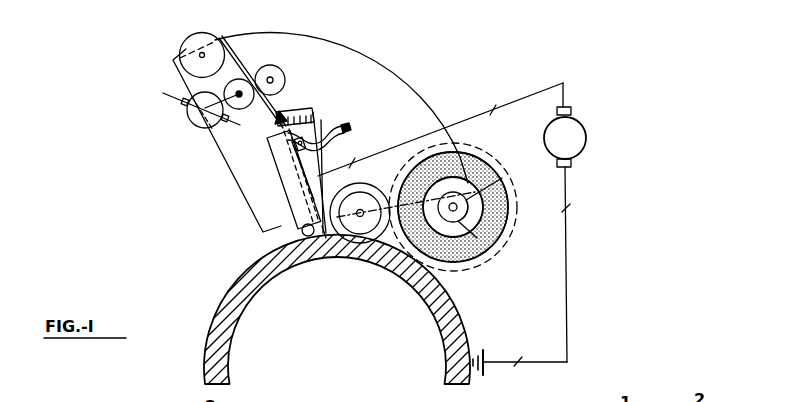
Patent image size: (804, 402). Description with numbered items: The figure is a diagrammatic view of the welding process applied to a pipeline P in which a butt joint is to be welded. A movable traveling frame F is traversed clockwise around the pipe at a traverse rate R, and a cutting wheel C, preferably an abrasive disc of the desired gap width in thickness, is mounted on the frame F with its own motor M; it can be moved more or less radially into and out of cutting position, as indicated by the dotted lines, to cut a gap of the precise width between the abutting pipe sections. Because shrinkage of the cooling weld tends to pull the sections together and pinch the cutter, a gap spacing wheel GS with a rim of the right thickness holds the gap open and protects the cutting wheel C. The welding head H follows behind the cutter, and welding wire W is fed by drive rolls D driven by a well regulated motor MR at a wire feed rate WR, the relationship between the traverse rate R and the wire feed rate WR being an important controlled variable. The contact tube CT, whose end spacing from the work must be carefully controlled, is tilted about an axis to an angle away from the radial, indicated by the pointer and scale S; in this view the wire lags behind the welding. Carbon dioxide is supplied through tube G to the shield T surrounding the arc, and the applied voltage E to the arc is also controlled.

The welding wire W is at (249, 118).
The wire feed rate WR is at (252, 64).
The drive rolls D is at (277, 70).
The pointer and scale S is at (291, 112).
The gas supply tube G is at (372, 121).
The traveling frame F is at (390, 67).
The applied voltage E is at (463, 229).
The wire feed motor MR is at (193, 114).
The welding head H is at (262, 151).
The shield T is at (330, 206).
The contact tube CT is at (285, 215).
The gap spacing wheel GS is at (402, 202).
The cutter motor M is at (455, 207).
The cutting wheel C is at (488, 208).
The traverse rate R is at (253, 221).
The pipeline P is at (238, 279).